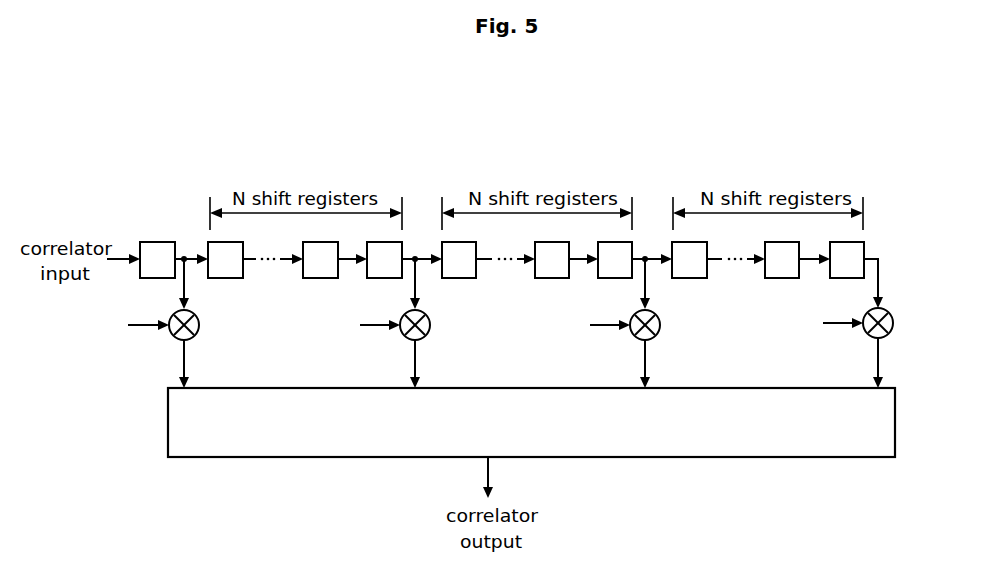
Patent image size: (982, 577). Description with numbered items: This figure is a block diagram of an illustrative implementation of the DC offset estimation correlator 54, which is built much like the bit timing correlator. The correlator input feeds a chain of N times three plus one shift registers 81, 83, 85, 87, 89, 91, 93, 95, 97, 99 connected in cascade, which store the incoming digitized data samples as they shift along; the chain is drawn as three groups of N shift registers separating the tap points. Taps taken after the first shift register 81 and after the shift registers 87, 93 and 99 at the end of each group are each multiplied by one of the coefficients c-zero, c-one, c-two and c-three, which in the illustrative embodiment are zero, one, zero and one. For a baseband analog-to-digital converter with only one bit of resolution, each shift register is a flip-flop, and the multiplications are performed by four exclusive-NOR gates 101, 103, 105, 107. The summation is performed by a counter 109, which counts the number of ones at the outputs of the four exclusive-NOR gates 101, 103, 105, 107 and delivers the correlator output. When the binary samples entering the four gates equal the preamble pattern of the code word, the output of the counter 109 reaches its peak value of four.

The DC offset estimation correlator 54 is at (695, 124).
The shift register 81 is at (140, 280).
The shift register 83 is at (220, 280).
The shift register 85 is at (307, 280).
The shift register 87 is at (372, 280).
The shift register 89 is at (447, 280).
The shift register 91 is at (540, 280).
The shift register 93 is at (603, 280).
The shift register 95 is at (695, 280).
The shift register 97 is at (772, 280).
The shift register 99 is at (835, 280).
The exclusive-NOR gate 101 is at (193, 337).
The exclusive-NOR gate 103 is at (427, 335).
The exclusive-NOR gate 105 is at (657, 333).
The exclusive-NOR gate 107 is at (873, 337).
The counter 109 is at (302, 457).